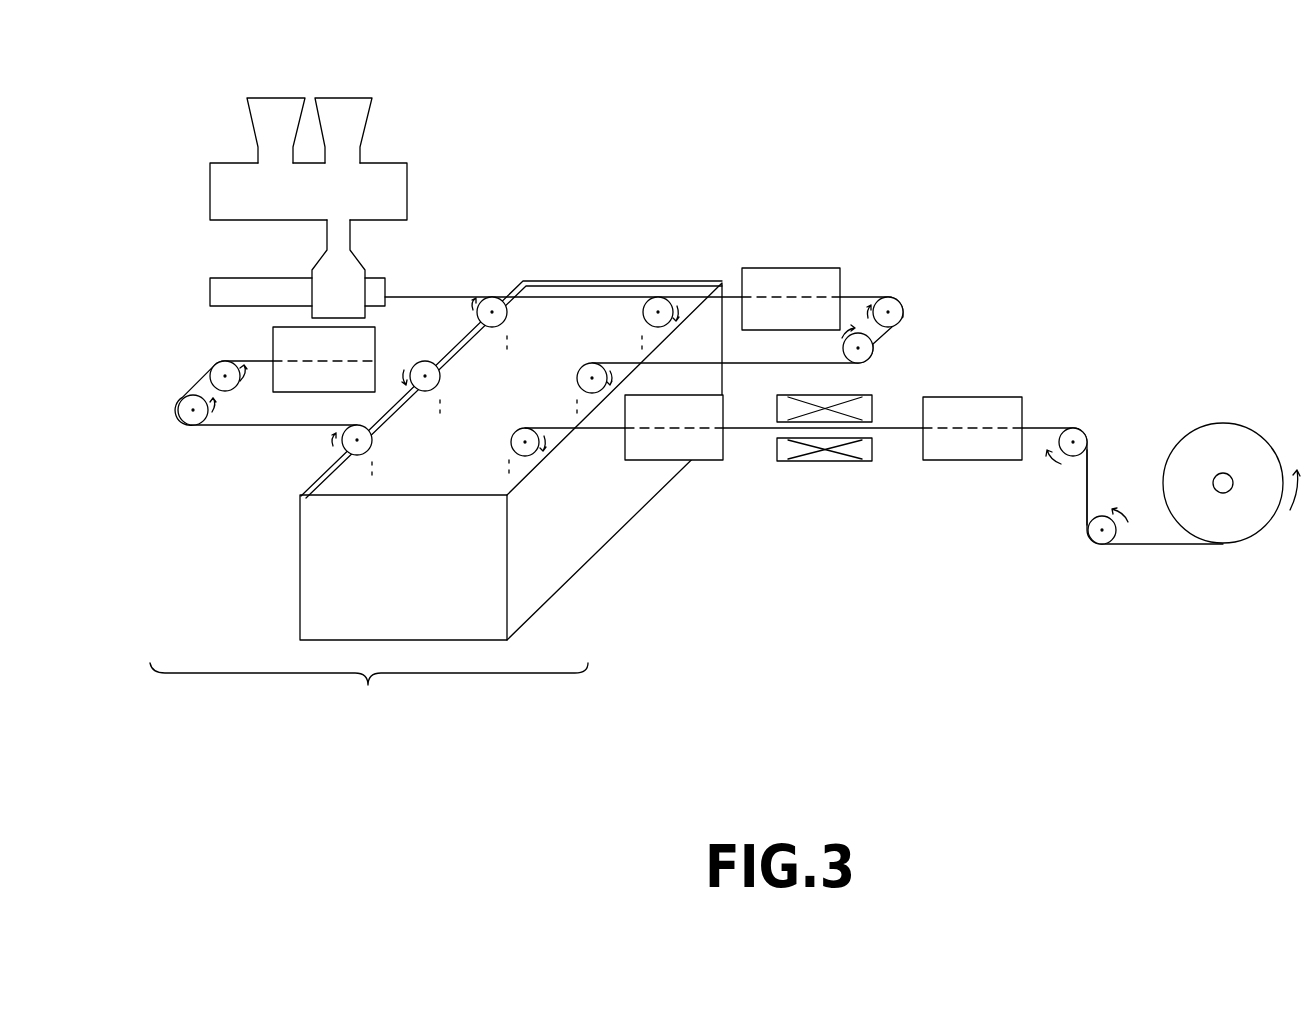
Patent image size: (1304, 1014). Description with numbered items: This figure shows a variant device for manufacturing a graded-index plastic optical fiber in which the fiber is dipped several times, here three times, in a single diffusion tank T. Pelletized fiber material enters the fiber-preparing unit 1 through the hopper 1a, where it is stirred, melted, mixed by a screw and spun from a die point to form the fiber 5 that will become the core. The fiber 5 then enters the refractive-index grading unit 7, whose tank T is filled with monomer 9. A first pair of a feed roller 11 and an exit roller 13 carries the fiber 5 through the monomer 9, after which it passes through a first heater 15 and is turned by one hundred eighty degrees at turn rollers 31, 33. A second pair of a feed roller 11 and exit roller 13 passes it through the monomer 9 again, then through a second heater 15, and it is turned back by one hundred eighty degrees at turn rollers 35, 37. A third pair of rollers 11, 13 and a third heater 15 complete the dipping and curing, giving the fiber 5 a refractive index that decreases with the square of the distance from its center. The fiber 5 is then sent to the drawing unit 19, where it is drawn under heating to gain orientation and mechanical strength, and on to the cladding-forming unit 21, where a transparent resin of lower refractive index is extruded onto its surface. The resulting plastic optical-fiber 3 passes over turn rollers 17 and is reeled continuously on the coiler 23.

The fiber-preparing unit 1 is at (431, 218).
The hopper 1a is at (293, 96).
The plastic optical-fiber 3 is at (1090, 500).
The fiber 5 is at (437, 296).
The refractive-index grading unit 7 is at (369, 695).
The monomer 9 is at (568, 310).
The feed roller 11 is at (491, 297).
The exit roller 13 is at (658, 300).
The heater 15 is at (275, 340).
The turn roller 17 is at (1082, 432).
The drawing unit 19 is at (837, 462).
The cladding-forming unit 21 is at (958, 460).
The coiler 23 is at (1210, 440).
The turn roller 31 is at (904, 316).
The turn roller 33 is at (873, 352).
The turn roller 35 is at (220, 366).
The turn roller 37 is at (187, 402).
The diffusion tank T is at (300, 583).